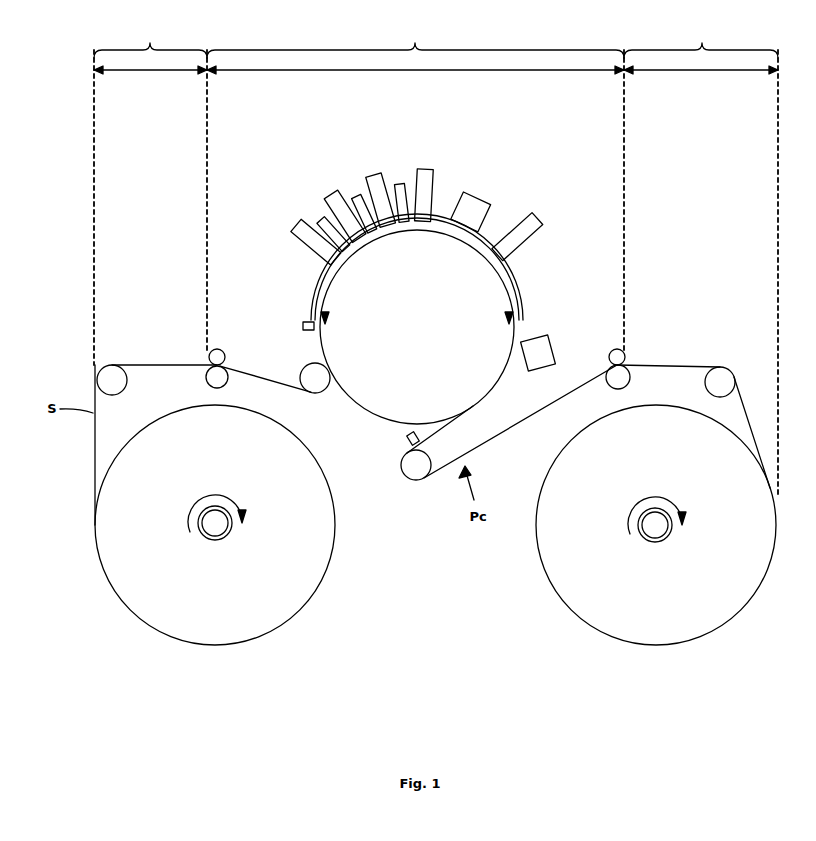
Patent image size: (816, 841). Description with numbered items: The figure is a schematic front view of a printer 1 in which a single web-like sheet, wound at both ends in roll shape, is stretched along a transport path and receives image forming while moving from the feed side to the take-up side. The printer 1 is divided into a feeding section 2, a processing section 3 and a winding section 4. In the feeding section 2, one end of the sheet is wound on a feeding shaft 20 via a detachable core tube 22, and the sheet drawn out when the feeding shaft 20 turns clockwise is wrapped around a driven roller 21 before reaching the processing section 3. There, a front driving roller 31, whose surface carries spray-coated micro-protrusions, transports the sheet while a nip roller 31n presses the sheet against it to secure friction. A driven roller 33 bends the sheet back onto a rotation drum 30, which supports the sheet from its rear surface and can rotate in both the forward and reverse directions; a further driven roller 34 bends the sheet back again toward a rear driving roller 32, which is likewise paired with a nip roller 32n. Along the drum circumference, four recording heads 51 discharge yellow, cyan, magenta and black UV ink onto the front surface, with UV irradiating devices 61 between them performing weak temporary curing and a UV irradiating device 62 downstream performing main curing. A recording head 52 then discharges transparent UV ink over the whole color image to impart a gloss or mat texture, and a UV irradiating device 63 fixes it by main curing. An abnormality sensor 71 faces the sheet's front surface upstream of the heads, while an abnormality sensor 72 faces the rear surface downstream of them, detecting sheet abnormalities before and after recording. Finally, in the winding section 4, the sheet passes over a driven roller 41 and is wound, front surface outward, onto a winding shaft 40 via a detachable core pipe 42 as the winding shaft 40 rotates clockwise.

The printer 1 is at (411, 672).
The feeding section 2 is at (150, 195).
The processing section 3 is at (415, 188).
The winding section 4 is at (701, 260).
The feeding shaft 20 is at (207, 523).
The driven roller 21 is at (110, 378).
The core tube 22 is at (228, 530).
The rotation drum 30 is at (373, 388).
The front driving roller 31 is at (217, 378).
The nip roller 31n is at (222, 350).
The rear driving roller 32 is at (614, 382).
The nip roller 32n is at (613, 351).
The driven roller 33 is at (308, 370).
The driven roller 34 is at (412, 469).
The winding shaft 40 is at (647, 525).
The driven roller 41 is at (722, 382).
The core pipe 42 is at (668, 532).
The recording heads 51 is at (300, 228).
The recording head 52 is at (538, 230).
The UV irradiating devices 61 is at (321, 218).
The UV irradiating device 62 is at (474, 205).
The UV irradiating device 63 is at (545, 353).
The abnormality sensor 71 is at (305, 324).
The abnormality sensor 72 is at (409, 438).